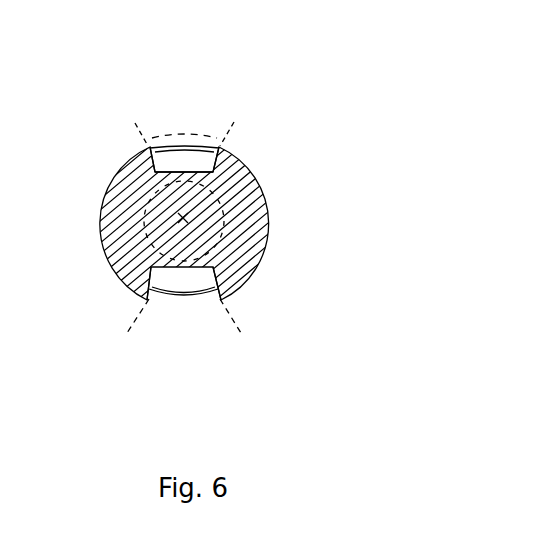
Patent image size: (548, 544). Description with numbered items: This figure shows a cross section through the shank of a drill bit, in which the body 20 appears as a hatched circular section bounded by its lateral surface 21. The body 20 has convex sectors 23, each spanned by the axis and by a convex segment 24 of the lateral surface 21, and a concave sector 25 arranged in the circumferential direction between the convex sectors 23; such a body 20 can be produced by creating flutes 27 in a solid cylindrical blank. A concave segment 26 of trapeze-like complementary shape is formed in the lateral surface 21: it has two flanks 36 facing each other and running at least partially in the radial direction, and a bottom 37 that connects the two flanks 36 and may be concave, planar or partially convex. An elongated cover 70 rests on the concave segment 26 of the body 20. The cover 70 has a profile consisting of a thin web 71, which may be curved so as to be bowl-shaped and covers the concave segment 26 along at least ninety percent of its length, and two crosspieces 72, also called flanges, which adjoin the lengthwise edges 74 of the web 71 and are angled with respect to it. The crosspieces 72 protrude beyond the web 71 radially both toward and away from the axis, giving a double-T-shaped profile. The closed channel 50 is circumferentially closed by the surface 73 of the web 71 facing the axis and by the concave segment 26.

The body 20 is at (45, 184).
The lateral surface 21 is at (195, 286).
The convex sector 23 is at (180, 245).
The convex segment 24 is at (256, 268).
The concave sector 25 is at (180, 250).
The concave segment 26 is at (179, 328).
The flute 27 is at (124, 280).
The flank 36 is at (155, 272).
The bottom 37 is at (186, 268).
The closed channel 50 is at (182, 163).
The cover 70 is at (182, 104).
The web 71 is at (184, 123).
The crosspiece 72 is at (149, 146).
The surface 73 is at (220, 151).
The lengthwise edge 74 is at (148, 146).